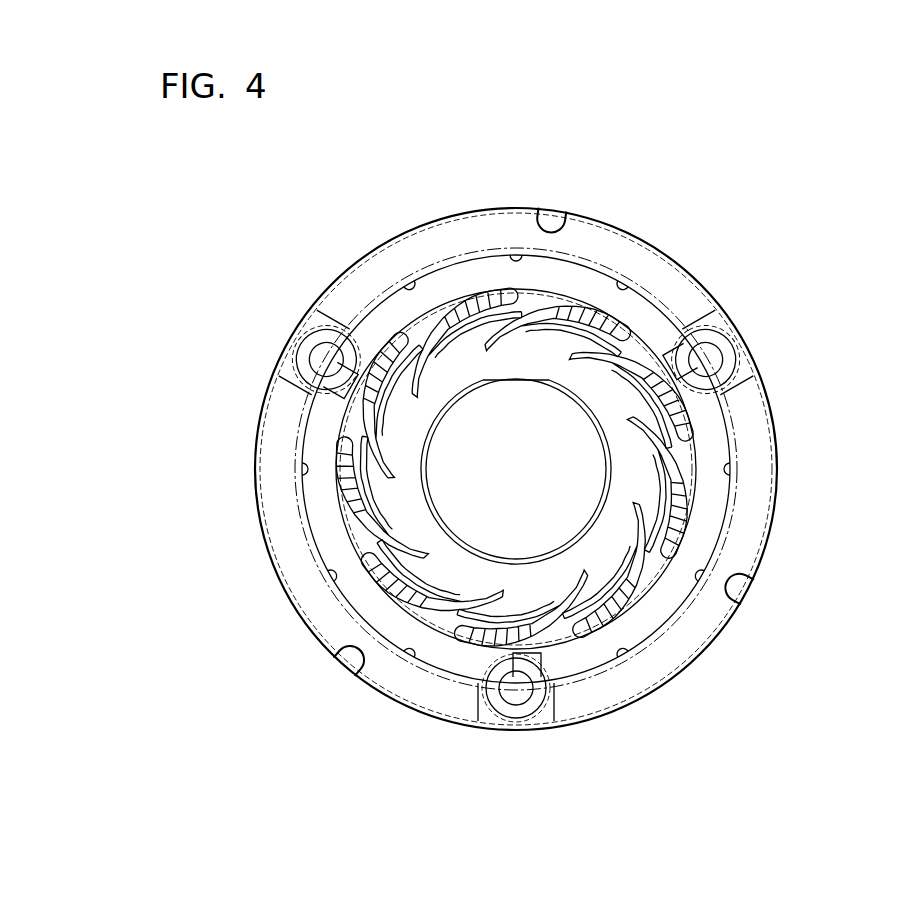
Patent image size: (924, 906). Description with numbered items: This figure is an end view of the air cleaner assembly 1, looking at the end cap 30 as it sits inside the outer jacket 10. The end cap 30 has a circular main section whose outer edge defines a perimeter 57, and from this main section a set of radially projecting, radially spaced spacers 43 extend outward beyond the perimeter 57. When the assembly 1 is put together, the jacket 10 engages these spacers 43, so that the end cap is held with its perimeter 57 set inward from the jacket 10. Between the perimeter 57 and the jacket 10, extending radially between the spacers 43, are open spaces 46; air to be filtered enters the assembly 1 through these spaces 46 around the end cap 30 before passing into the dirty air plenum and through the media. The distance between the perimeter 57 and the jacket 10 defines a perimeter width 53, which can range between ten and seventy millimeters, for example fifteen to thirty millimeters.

The assembly 1 is at (786, 280).
The outer jacket 10 is at (516, 430).
The second end cap 30 is at (524, 426).
The radially projecting spacers 43 is at (557, 526).
The open spaces 46 is at (546, 425).
The perimeter width 53 is at (569, 469).
The outer perimeter 57 is at (451, 471).